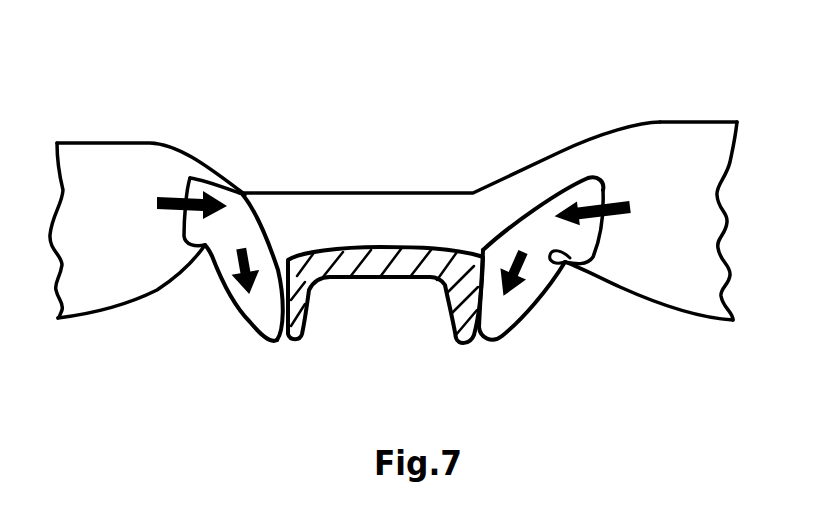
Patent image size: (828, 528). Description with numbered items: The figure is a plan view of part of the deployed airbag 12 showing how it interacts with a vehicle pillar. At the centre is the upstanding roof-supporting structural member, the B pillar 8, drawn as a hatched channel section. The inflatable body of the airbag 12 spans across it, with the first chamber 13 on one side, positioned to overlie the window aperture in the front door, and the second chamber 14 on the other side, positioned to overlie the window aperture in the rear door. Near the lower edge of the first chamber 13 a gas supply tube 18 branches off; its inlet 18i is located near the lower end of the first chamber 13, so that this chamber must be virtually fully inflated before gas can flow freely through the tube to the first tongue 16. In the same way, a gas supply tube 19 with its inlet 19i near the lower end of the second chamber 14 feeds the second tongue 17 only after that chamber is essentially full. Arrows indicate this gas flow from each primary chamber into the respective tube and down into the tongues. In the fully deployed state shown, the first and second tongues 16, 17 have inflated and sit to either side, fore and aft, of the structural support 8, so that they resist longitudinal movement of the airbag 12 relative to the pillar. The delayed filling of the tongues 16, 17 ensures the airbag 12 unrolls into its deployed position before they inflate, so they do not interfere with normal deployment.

The B pillar 8 is at (307, 320).
The airbag 12 is at (383, 193).
The first chamber 13 is at (73, 225).
The second chamber 14 is at (675, 225).
The first tongue 16 is at (227, 298).
The second tongue 17 is at (537, 308).
The gas supply tube 18 is at (265, 197).
The inlet 18i is at (190, 173).
The gas supply tube 19 is at (542, 200).
The inlet 19i is at (603, 193).